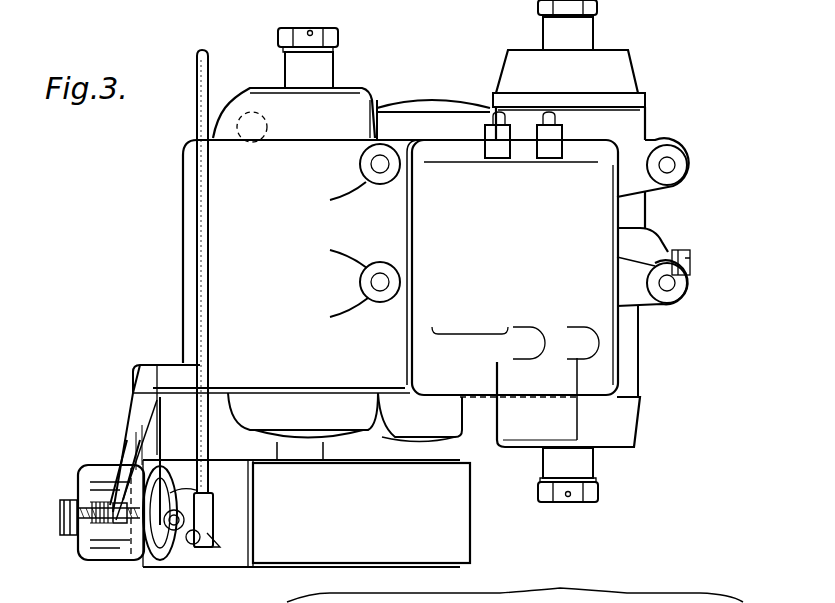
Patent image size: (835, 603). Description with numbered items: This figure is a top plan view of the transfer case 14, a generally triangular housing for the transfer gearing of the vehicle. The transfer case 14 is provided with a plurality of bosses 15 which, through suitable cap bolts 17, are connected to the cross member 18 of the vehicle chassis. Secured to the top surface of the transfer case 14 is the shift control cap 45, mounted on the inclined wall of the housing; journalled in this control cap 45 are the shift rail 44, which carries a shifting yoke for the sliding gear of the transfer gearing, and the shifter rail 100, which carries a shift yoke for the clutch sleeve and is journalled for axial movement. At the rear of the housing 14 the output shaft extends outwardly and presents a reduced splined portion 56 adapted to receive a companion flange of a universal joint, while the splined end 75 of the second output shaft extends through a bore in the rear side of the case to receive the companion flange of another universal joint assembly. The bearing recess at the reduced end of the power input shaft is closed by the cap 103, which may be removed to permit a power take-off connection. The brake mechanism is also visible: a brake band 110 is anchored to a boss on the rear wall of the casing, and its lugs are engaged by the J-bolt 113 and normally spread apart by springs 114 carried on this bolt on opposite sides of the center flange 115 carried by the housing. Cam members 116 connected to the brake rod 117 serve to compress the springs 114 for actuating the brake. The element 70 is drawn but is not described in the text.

The transfer case 14 is at (222, 215).
The bosses 15 is at (390, 174).
The cap bolts 17 is at (670, 602).
The cross member 18 is at (569, 599).
The shift rail 44 is at (488, 106).
The shift control cap 45 is at (418, 305).
The reduced splined portion 56 is at (302, 453).
The shield 70 is at (452, 437).
The splined end 75 is at (588, 463).
The shifter rail 100 is at (553, 116).
The cap 103 is at (288, 432).
The brake band 110 is at (457, 520).
The J-bolt 113 is at (52, 515).
The springs 114 is at (110, 520).
The center flange 115 is at (88, 470).
The cam members 116 is at (184, 518).
The brake rod 117 is at (203, 283).